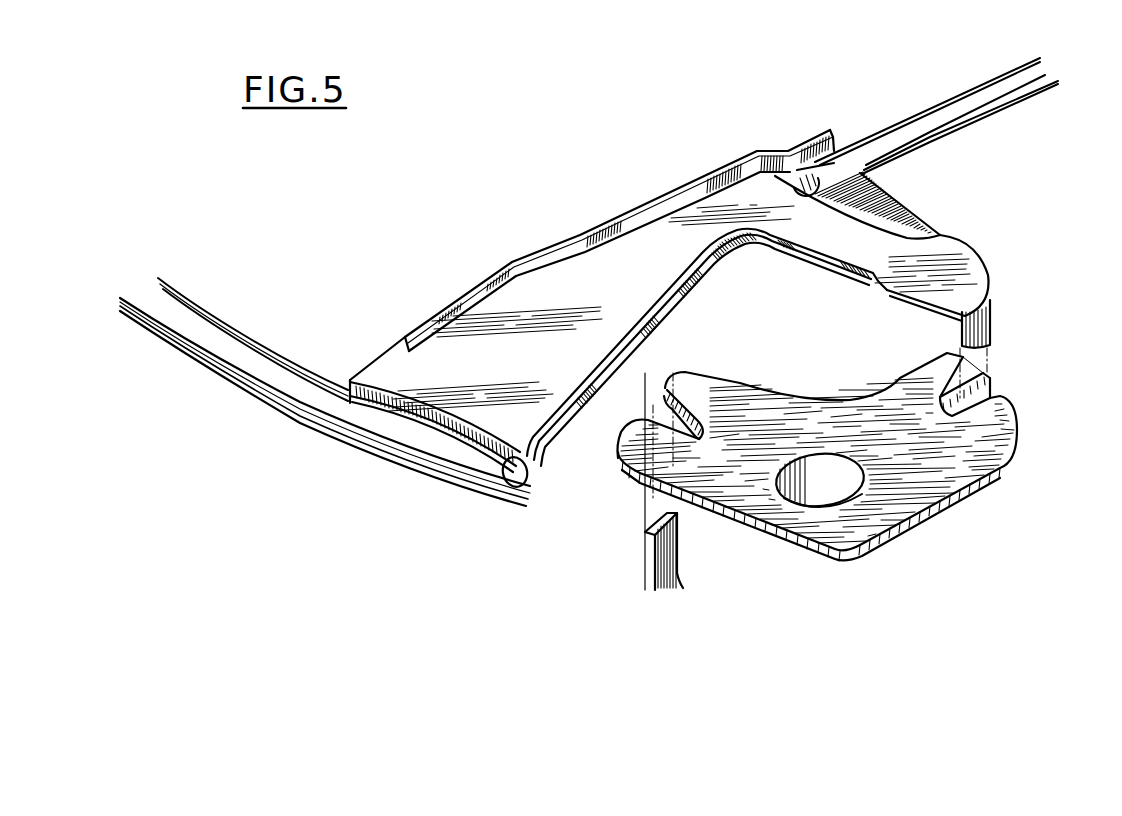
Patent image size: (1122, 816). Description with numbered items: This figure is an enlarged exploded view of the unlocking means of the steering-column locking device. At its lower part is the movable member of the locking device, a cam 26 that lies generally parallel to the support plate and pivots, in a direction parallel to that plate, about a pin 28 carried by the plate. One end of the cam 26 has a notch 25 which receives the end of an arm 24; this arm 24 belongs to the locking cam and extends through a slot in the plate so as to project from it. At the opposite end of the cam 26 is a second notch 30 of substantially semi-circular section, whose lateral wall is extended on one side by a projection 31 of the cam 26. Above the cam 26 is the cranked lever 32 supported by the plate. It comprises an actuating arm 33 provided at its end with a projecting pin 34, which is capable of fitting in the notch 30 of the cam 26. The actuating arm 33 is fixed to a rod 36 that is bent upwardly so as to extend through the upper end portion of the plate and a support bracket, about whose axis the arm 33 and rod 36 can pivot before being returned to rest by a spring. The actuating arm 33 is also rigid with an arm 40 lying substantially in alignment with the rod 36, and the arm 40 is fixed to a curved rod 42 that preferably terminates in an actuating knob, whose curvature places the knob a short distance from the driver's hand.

The arm 24 is at (667, 563).
The notch 25 is at (688, 410).
The cam 26 is at (947, 473).
The pin 28 is at (830, 478).
The second notch 30 is at (990, 398).
The projection 31 is at (990, 378).
The cranked lever 32 is at (420, 320).
The actuating arm 33 is at (966, 288).
The projecting pin 34 is at (993, 330).
The rod 36 is at (960, 112).
The arm 40 is at (580, 278).
The curved rod 42 is at (337, 417).